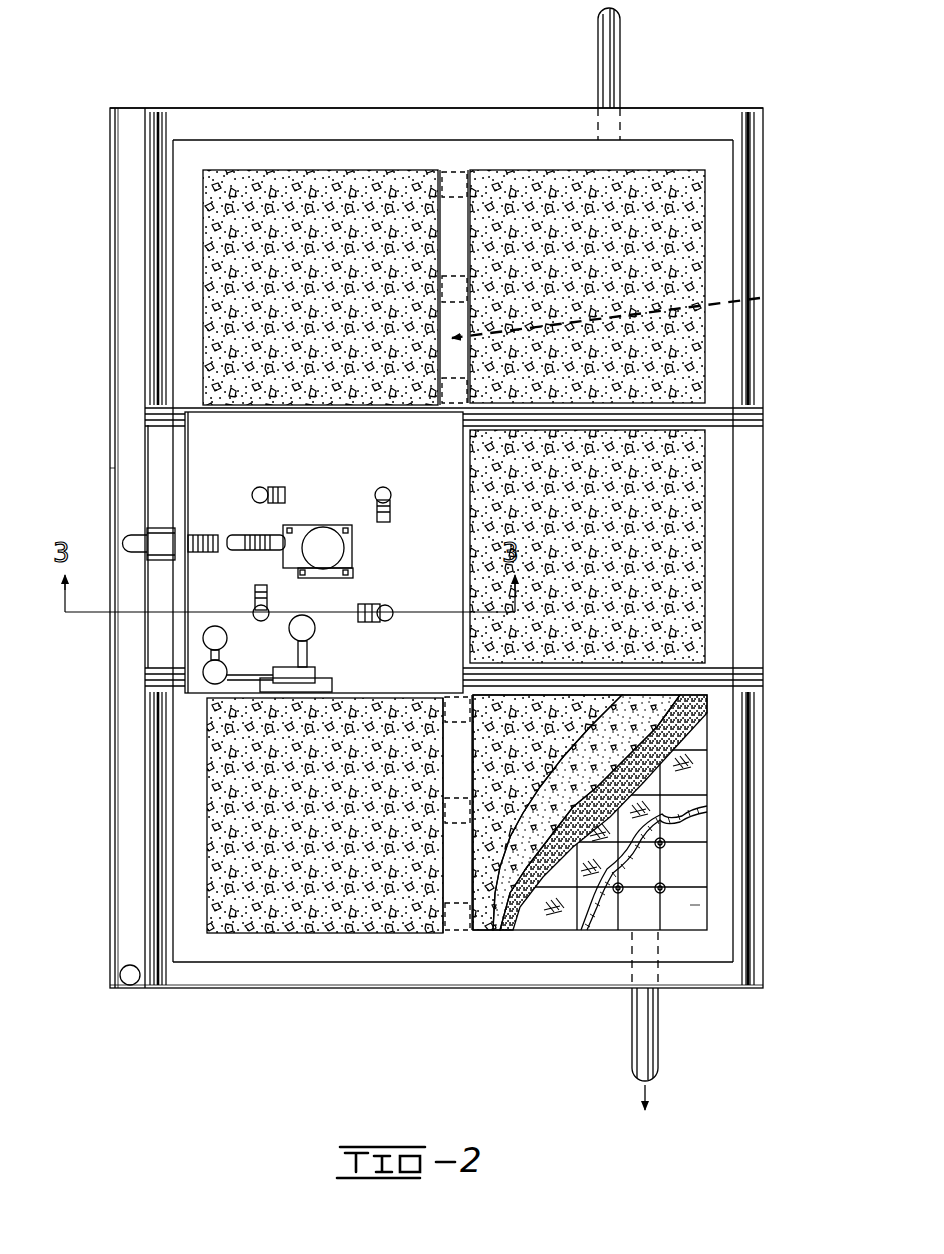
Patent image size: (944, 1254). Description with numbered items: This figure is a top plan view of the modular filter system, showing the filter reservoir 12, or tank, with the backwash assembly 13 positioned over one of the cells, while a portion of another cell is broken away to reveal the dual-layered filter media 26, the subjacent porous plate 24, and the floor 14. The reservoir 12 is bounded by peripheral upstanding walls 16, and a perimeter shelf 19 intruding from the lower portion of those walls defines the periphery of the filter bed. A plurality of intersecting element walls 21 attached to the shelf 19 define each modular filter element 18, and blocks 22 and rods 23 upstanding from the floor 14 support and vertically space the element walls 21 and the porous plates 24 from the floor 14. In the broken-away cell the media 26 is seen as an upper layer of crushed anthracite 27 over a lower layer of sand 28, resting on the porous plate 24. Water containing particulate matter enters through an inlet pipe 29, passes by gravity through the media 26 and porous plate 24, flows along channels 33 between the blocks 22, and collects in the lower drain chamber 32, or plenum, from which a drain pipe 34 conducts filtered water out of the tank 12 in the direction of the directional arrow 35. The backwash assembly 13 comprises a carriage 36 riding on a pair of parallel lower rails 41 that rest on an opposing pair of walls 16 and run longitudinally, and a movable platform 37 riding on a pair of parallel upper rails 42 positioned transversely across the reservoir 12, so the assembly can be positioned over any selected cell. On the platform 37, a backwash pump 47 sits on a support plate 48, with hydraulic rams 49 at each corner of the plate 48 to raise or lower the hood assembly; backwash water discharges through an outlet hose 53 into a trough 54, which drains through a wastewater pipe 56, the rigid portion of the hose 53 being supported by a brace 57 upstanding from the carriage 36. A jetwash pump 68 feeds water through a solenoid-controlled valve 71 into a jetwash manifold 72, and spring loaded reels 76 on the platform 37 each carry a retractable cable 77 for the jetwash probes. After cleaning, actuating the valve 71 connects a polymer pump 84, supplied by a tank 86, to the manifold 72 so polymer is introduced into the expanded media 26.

The filter reservoir 12 is at (667, 67).
The backwash assembly 13 is at (100, 468).
The floor 14 is at (682, 918).
The upstanding walls 16 is at (378, 115).
The modular filter element 18 is at (236, 160).
The perimeter shelf 19 is at (720, 613).
The element walls 21 is at (462, 218).
The blocks 22 is at (453, 180).
The rods 23 is at (667, 843).
The porous plates 24 is at (705, 812).
The dual-layered filter media 26 is at (506, 802).
The crushed anthracite layer 27 is at (705, 696).
The sand layer 28 is at (700, 703).
The inlet pipe 29 is at (622, 12).
The lower drain chamber 32 is at (684, 888).
The channels 33 is at (760, 298).
The drain pipe 34 is at (660, 1043).
The directional arrow 35 is at (648, 1098).
The carriage 36 is at (752, 540).
The movable platform 37 is at (237, 455).
The lower rails 41 is at (155, 270).
The upper rails 42 is at (740, 410).
The backwash pump 47 is at (335, 551).
The support plate 48 is at (310, 525).
The hydraulic rams 49 is at (353, 574).
The outlet hose 53 is at (196, 535).
The trough 54 is at (110, 935).
The wastewater pipe 56 is at (120, 984).
The brace 57 is at (165, 560).
The jetwash pump 68 is at (315, 636).
The solenoid-controlled valve 71 is at (312, 670).
The jetwash manifold 72 is at (332, 683).
The spring loaded reels 76 is at (272, 487).
The retractable cable 77 is at (386, 488).
The polymer pump 84 is at (228, 670).
The tank 86 is at (228, 640).